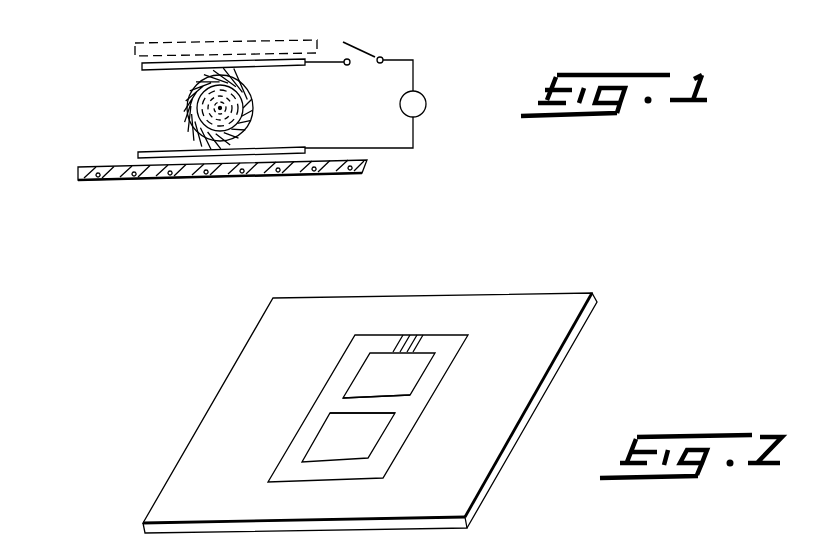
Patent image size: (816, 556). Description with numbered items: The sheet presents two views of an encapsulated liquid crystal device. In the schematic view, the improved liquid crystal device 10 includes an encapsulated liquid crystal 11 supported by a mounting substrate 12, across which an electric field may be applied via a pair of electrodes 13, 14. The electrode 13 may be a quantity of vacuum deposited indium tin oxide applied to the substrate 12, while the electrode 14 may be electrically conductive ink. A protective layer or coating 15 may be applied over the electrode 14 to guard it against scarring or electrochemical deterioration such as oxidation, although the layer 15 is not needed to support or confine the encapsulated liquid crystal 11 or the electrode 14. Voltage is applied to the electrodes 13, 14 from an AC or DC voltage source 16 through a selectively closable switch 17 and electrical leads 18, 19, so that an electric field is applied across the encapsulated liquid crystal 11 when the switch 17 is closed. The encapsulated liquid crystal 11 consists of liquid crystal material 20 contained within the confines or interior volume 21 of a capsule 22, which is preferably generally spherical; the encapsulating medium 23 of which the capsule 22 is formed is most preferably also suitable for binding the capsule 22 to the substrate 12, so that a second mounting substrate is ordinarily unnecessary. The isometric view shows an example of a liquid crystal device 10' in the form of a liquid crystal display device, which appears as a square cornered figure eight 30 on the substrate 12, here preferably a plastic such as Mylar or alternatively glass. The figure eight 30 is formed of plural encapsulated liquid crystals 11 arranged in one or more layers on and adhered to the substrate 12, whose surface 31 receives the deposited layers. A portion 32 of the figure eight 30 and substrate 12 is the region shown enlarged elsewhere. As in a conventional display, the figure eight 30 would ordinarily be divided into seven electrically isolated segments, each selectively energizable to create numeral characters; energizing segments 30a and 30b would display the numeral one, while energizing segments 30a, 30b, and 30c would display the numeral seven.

In FIG. 1, the liquid crystal device 10 is at (209, 107).
In FIG. 2, the liquid crystal device 10' is at (370, 378).
In FIG. 1, the encapsulated liquid crystal 11 is at (185, 124).
In FIG. 1, the mounting substrate 12 is at (104, 181).
In FIG. 2, the mounting substrate 12 is at (485, 497).
In FIG. 1, the electrode 13 is at (138, 155).
In FIG. 1, the electrode 14 is at (142, 66).
In FIG. 1, the protective layer 15 is at (245, 40).
In FIG. 1, the voltage source 16 is at (426, 109).
In FIG. 1, the switch 17 is at (363, 47).
In FIG. 1, the electrical lead 18 is at (347, 66).
In FIG. 1, the electrical lead 19 is at (393, 149).
In FIG. 1, the liquid crystal material 20 is at (253, 88).
In FIG. 1, the interior volume 21 is at (258, 108).
In FIG. 1, the capsule 22 is at (246, 128).
In FIG. 1, the encapsulating medium 23 is at (188, 106).
In FIG. 2, the figure eight 30 is at (434, 386).
In FIG. 2, the segment 30a is at (400, 449).
In FIG. 2, the segment 30b is at (433, 402).
In FIG. 2, the segment 30c is at (455, 338).
In FIG. 2, the surface 31 is at (500, 438).
In FIG. 2, the portion 32 is at (406, 321).